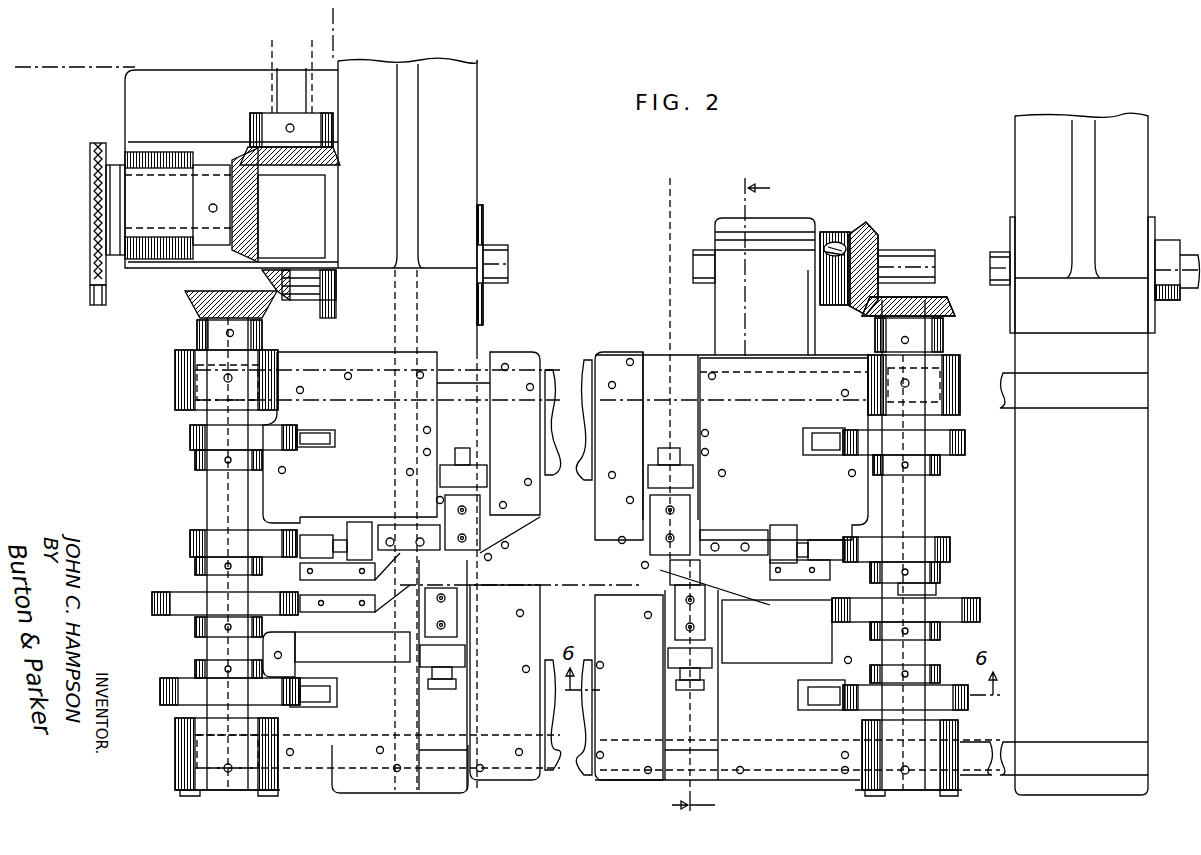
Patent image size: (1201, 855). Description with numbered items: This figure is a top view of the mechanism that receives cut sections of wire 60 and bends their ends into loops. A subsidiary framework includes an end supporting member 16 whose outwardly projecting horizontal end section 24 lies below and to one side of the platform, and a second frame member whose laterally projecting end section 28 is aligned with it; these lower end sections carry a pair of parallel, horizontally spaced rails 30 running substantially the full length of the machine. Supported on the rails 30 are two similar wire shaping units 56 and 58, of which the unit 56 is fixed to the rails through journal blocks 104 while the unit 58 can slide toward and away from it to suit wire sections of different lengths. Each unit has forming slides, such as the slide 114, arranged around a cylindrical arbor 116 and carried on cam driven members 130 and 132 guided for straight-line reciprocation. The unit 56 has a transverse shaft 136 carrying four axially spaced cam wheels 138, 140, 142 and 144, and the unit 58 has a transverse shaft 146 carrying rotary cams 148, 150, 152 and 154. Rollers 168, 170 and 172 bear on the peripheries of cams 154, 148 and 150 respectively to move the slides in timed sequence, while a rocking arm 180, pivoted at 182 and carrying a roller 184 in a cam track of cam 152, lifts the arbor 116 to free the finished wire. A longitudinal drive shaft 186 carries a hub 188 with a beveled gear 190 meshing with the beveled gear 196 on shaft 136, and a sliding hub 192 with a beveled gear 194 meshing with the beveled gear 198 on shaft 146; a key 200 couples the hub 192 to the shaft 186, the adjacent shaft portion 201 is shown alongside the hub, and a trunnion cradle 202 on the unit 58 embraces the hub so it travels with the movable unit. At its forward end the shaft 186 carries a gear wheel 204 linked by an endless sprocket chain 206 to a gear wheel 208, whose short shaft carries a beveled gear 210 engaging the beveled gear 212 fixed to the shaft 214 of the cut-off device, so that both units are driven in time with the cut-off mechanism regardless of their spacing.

The end supporting member 16 is at (476, 186).
The horizontal end section 24 is at (400, 781).
The horizontal end section 28 is at (1082, 454).
The rails 30 is at (551, 374).
The wire shaping unit 56 is at (377, 571).
The wire shaping unit 58 is at (797, 569).
The wire 60 is at (545, 584).
The journal blocks 104 is at (190, 378).
The forming member or slide 114 is at (655, 530).
The arbor 116 is at (680, 568).
The cam driven member 130 is at (710, 718).
The cam driven member 132 is at (650, 433).
The shaft 136 is at (215, 497).
The cam wheel 138 is at (198, 437).
The cam wheel 140 is at (198, 542).
The cam wheel 142 is at (160, 604).
The cam wheel 144 is at (172, 682).
The shaft 146 is at (918, 521).
The rotary cam 148 is at (958, 452).
The rotary cam 150 is at (950, 550).
The rotary cam 152 is at (955, 620).
The rotary cam 154 is at (955, 706).
The roller 168 is at (318, 700).
The roller 170 is at (808, 438).
The roller 172 is at (308, 540).
The rocking arm 180 is at (345, 590).
The pivot 182 is at (330, 625).
The roller 184 is at (936, 588).
The drive shaft 186 is at (508, 268).
The hub 188 is at (336, 293).
The beveled gear 190 is at (280, 305).
The hub 192 is at (845, 232).
The beveled gear 194 is at (878, 238).
The beveled gear 196 is at (193, 318).
The beveled gear 198 is at (950, 310).
The key 200 is at (835, 240).
The shaft 201 is at (870, 228).
The trunnion cradle 202 is at (790, 226).
The gear wheel 204 is at (107, 302).
The endless sprocket chain 206 is at (108, 252).
The gear wheel 208 is at (100, 205).
The beveled gear 210 is at (262, 225).
The beveled gear 212 is at (288, 168).
The shaft 214 is at (282, 92).